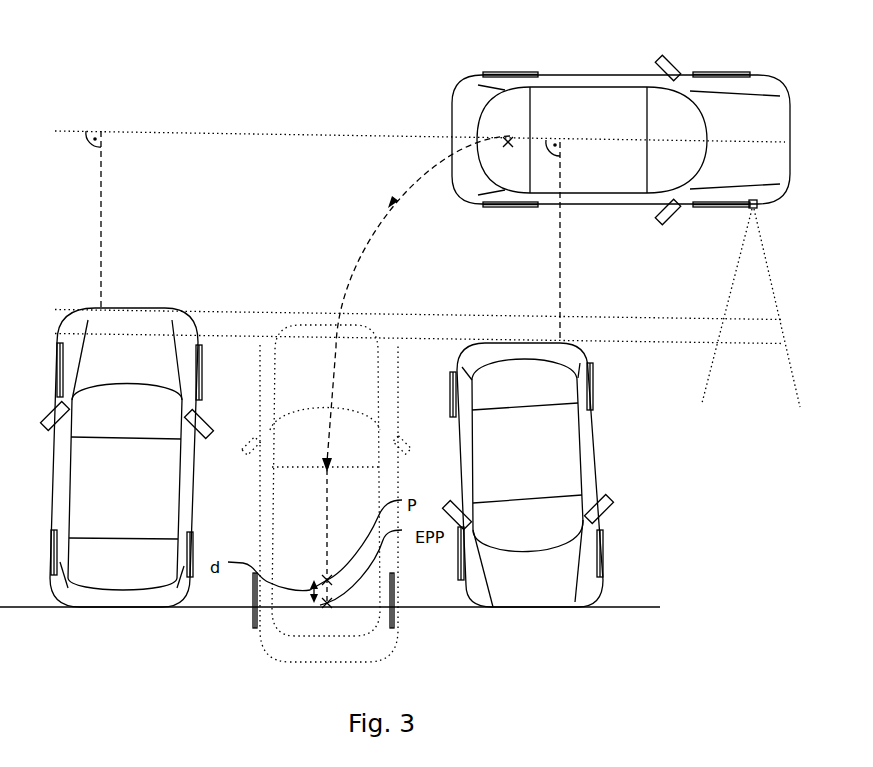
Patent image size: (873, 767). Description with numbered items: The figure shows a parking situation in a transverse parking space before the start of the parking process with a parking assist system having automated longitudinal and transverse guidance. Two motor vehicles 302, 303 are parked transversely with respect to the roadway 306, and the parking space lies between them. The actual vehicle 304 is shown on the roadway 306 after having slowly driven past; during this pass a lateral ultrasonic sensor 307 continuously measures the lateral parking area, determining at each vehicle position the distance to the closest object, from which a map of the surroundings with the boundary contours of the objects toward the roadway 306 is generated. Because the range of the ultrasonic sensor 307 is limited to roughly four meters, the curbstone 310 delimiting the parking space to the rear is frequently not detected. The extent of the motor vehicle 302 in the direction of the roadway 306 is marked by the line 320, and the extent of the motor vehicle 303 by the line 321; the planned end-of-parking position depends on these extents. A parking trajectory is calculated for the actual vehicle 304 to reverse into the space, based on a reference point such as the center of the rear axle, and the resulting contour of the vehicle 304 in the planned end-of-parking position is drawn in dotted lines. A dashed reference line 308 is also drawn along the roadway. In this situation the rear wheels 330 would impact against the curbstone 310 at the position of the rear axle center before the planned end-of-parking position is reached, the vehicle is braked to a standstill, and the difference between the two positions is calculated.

The motor vehicle 302 is at (87, 608).
The motor vehicle 303 is at (595, 456).
The actual vehicle 304 is at (450, 110).
The roadway 306 is at (373, 226).
The lateral ultrasonic sensor 307 is at (752, 212).
The travel lane centerline 308 is at (203, 131).
The curbstone 310 is at (237, 607).
The line 320 is at (208, 310).
The line 321 is at (630, 343).
The rear wheels 330 is at (508, 73).